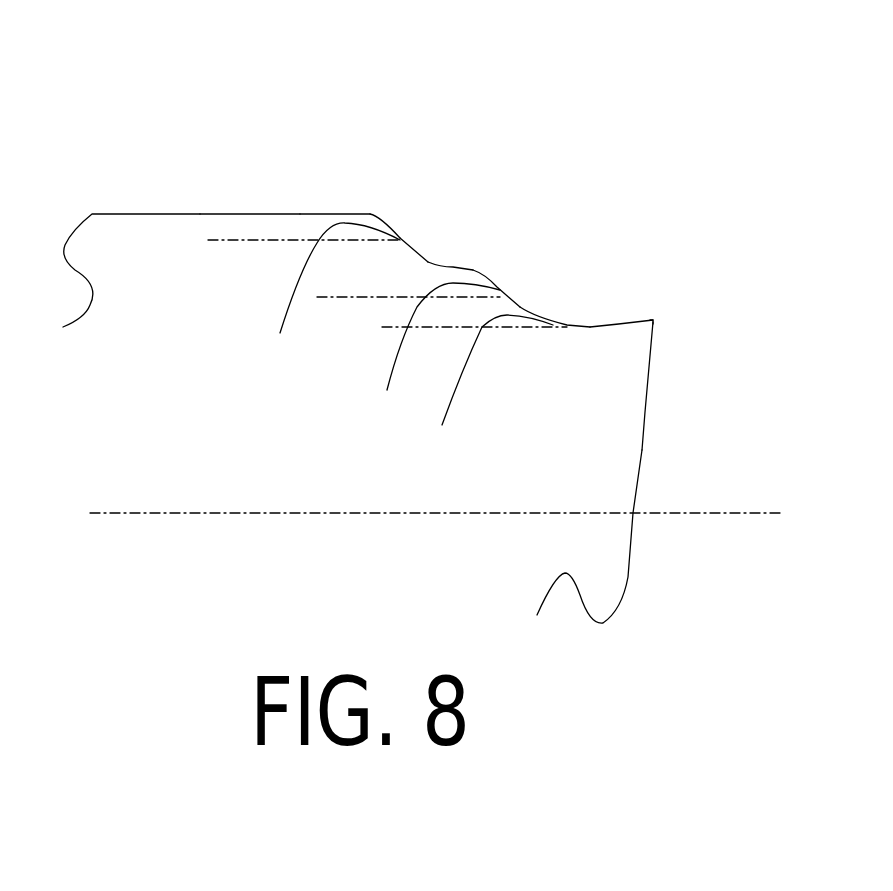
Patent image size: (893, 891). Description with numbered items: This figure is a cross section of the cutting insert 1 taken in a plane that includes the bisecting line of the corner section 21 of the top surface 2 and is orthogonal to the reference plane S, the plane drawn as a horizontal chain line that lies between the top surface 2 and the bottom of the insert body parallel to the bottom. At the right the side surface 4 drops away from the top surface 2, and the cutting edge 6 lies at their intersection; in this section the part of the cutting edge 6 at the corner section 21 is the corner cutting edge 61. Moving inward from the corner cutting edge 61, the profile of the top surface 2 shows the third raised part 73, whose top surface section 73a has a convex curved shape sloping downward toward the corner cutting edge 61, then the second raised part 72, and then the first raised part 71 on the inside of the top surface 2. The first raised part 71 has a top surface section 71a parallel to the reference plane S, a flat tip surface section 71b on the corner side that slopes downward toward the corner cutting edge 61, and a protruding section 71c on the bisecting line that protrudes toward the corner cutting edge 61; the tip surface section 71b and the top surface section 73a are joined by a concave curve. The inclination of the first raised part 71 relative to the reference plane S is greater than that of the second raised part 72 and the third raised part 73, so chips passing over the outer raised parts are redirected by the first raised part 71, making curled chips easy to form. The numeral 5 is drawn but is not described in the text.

The cutting insert 1 is at (608, 135).
The top surface 2 is at (145, 215).
The side surface 4 is at (645, 412).
The buttress portion 5 is at (615, 320).
The cutting edge 6 is at (721, 386).
The corner cutting edge 61 is at (655, 323).
The corner section 21 is at (653, 320).
The first raised part 71 is at (225, 215).
The top surface section 71a is at (308, 215).
The tip surface section 71b is at (417, 247).
The protruding section 71c is at (377, 217).
The second raised part 72 is at (563, 322).
The third raised part 73 is at (497, 288).
The top surface section 73a is at (470, 268).
The reference plane S is at (419, 513).